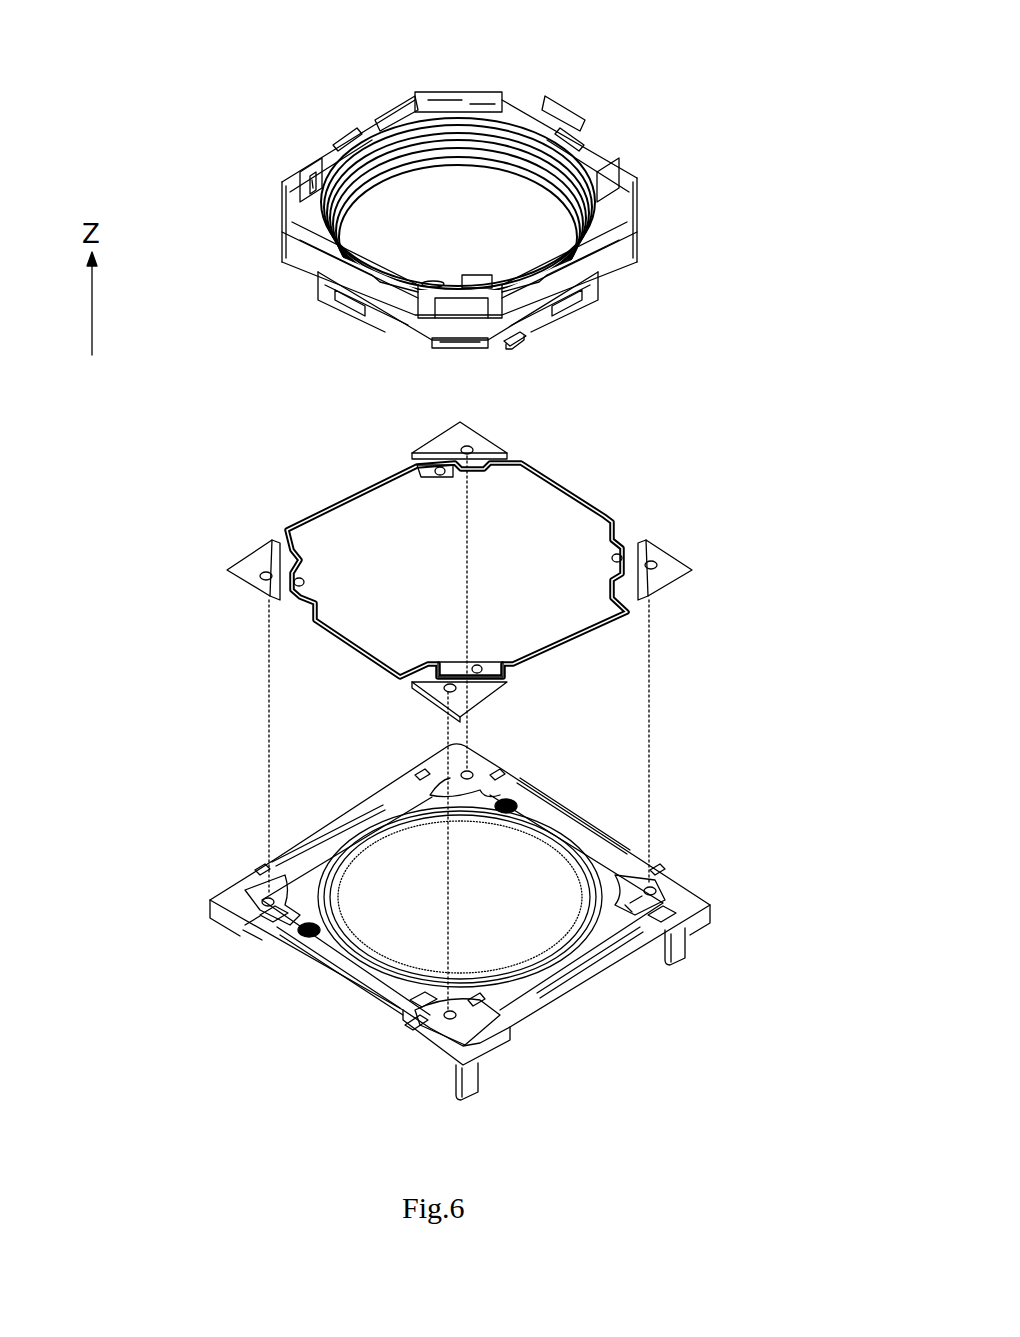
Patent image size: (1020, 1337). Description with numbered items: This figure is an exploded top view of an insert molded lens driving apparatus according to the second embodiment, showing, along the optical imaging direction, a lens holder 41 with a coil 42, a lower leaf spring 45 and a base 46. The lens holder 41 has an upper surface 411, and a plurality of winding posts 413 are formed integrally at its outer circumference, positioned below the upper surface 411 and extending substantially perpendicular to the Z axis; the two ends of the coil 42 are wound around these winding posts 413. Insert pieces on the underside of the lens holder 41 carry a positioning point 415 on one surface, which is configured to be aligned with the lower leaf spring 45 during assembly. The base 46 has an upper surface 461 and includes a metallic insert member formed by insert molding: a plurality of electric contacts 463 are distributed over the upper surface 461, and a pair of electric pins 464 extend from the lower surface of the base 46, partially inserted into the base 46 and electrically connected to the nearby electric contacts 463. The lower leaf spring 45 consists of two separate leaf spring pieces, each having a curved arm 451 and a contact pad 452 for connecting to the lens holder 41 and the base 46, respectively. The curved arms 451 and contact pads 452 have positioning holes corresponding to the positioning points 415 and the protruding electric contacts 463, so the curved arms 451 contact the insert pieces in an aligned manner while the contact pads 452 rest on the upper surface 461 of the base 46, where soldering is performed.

The lens holder 41 is at (652, 93).
The upper surface 411 is at (308, 203).
The winding posts 413 is at (527, 347).
The positioning point 415 is at (428, 478).
The coil 42 is at (612, 258).
The lower leaf spring 45 is at (686, 474).
The curved arm 451 is at (308, 568).
The contact pad 452 is at (497, 432).
The base 46 is at (703, 778).
The upper surface 461 is at (482, 763).
The electric contacts 463 is at (262, 895).
The electric pins 464 is at (673, 955).